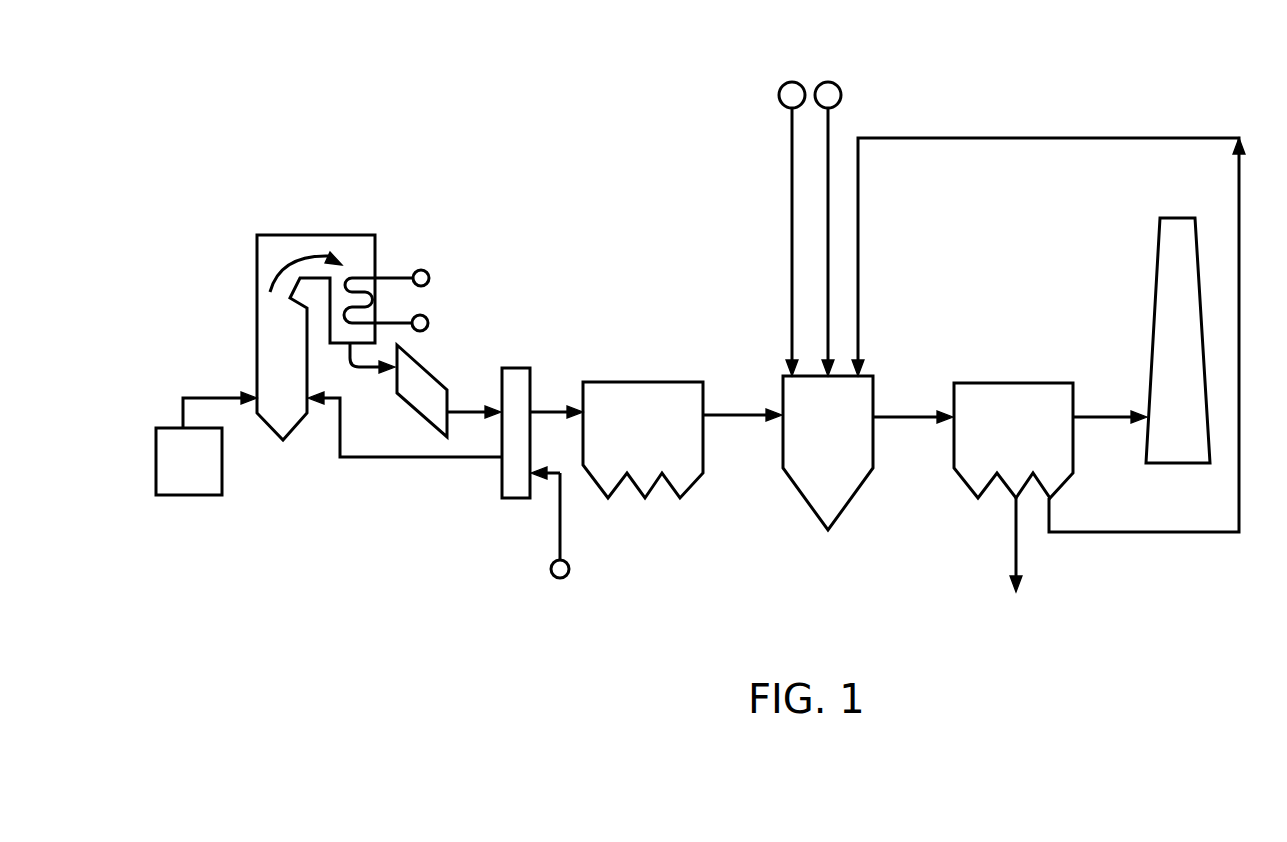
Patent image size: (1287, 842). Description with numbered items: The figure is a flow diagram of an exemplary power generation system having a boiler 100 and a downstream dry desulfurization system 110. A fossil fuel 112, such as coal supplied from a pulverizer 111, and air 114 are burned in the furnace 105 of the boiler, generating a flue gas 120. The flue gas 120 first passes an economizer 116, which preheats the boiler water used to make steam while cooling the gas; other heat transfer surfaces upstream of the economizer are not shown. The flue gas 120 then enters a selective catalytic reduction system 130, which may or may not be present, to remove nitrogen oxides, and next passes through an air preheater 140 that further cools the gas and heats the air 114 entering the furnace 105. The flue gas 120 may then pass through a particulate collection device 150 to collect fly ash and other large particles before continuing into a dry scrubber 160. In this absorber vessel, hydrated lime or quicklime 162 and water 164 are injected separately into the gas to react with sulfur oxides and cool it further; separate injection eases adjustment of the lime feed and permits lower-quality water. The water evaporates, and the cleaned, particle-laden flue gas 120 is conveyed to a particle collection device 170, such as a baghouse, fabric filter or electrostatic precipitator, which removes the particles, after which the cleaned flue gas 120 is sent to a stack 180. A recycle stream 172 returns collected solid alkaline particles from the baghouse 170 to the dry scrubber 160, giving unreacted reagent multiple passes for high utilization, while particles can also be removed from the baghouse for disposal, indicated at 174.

The boiler 100 is at (358, 105).
The desulfurization system 110 is at (626, 211).
The furnace 105 is at (273, 323).
The flue gas 120 is at (285, 253).
The economizer 116 is at (385, 278).
The selective catalytic reduction (SCR) system 130 is at (430, 370).
The air preheater 140 is at (522, 368).
The particulate collection device 150 is at (627, 438).
The dry scrubber 160 is at (808, 431).
The hydrated lime or quicklime 162 is at (779, 94).
The water 164 is at (840, 93).
The particle collection device (baghouse) 170 is at (993, 438).
The recycle stream 172 is at (1155, 133).
The particle disposal 174 is at (1013, 540).
The stack 180 is at (1158, 431).
The pulverizer 111 is at (172, 497).
The fossil fuel 112 is at (208, 395).
The air 114 is at (417, 460).